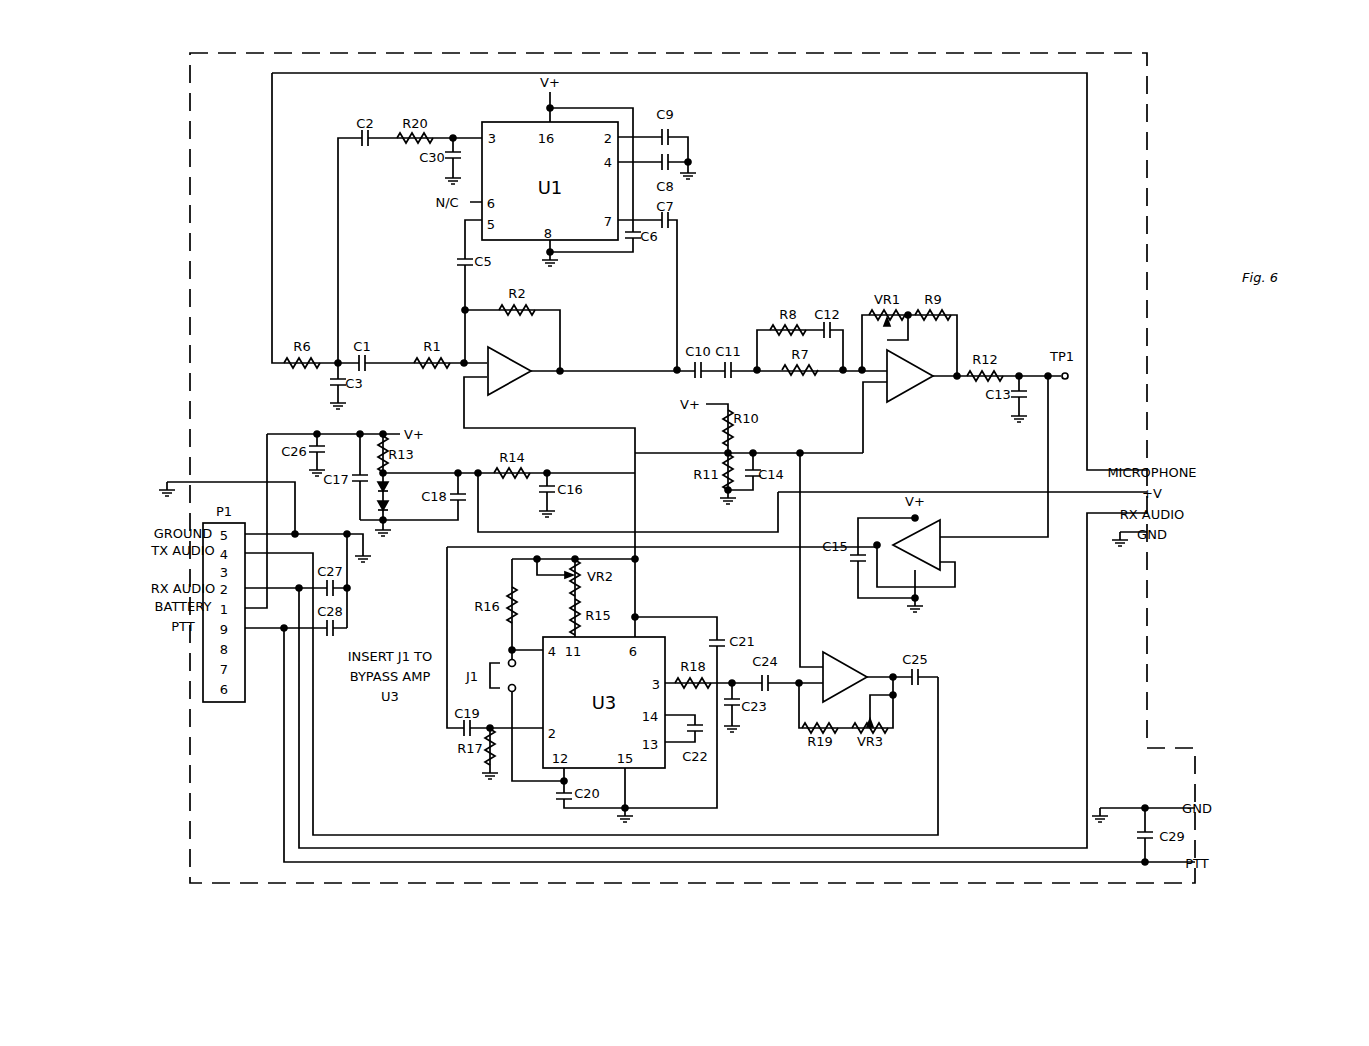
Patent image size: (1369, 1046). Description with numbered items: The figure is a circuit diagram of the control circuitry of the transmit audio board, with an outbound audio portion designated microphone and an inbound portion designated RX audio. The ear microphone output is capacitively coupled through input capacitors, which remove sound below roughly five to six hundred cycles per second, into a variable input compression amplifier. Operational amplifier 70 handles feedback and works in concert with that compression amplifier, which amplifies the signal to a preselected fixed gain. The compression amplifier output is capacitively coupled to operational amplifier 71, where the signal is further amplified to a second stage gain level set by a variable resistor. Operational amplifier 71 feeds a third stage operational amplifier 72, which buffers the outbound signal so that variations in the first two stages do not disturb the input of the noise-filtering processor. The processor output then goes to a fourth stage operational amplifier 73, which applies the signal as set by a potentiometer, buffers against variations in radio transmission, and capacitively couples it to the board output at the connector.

The operational amplifier 70 is at (513, 385).
The operational amplifier 71 is at (912, 392).
The third stage operational amplifier 72 is at (930, 527).
The fourth stage operational amplifier 73 is at (838, 655).